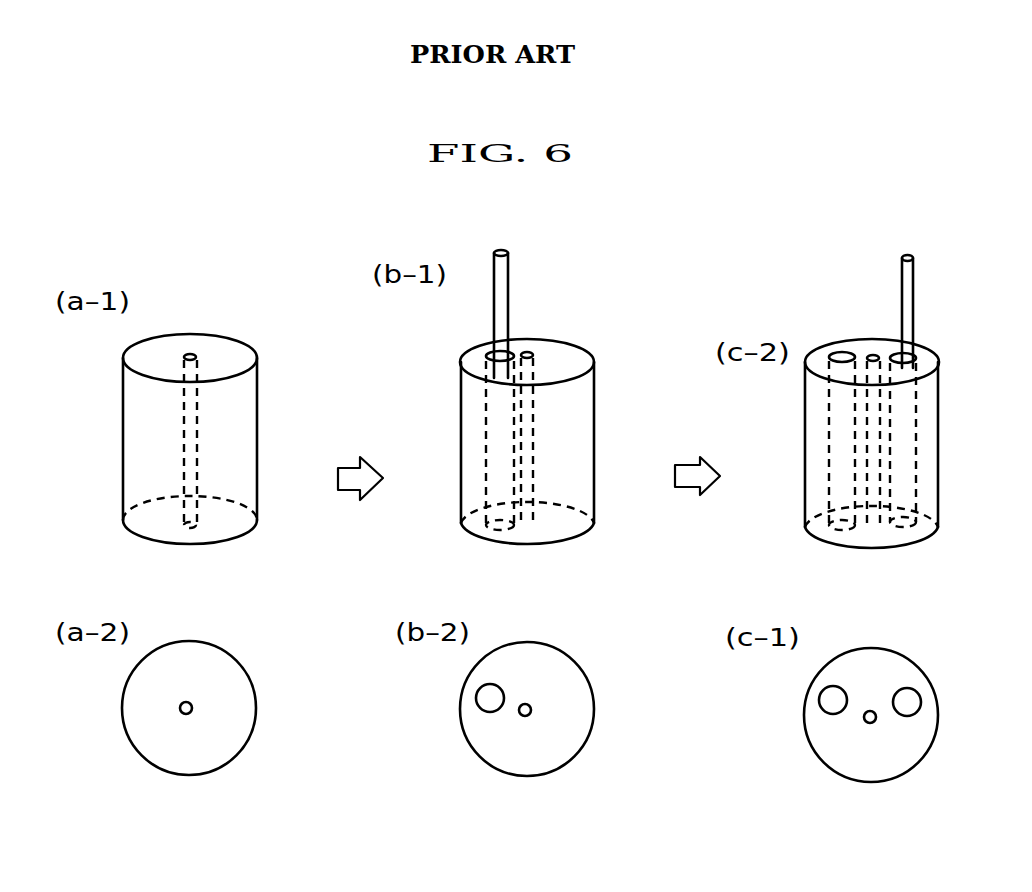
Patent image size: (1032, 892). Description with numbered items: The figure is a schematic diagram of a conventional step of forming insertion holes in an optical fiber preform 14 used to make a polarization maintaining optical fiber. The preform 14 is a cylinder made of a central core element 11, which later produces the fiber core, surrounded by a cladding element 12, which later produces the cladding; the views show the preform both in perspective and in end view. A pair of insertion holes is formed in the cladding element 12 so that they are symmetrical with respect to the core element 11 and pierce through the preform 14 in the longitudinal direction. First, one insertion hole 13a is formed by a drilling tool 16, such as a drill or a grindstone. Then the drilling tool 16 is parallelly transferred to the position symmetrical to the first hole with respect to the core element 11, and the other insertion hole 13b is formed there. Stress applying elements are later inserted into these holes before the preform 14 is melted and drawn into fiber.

The core element 11 is at (192, 352).
The cladding element 12 is at (236, 352).
The insertion hole 13a is at (492, 348).
The insertion hole 13b is at (918, 348).
The optical fiber preform 14 is at (257, 432).
The drilling tool 16 is at (505, 278).